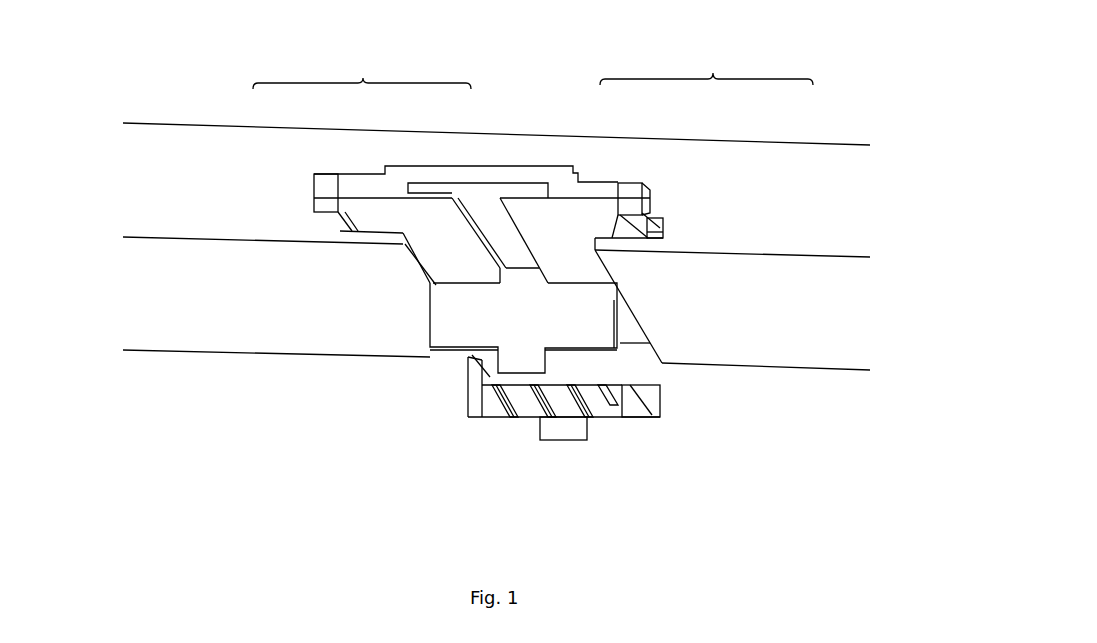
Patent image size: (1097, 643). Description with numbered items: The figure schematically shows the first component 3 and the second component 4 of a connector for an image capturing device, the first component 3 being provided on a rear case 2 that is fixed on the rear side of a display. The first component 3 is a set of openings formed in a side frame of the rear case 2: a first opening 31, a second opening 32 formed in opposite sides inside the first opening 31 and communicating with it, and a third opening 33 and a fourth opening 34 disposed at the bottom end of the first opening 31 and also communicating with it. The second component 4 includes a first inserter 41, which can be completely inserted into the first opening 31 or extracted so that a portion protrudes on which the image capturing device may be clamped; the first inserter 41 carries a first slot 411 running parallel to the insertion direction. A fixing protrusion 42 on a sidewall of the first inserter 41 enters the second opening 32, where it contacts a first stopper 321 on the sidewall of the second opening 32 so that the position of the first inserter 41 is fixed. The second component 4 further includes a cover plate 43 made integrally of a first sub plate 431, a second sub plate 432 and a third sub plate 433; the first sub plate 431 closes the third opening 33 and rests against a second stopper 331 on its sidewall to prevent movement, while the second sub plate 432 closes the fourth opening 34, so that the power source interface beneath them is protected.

The rear case 2 is at (812, 197).
The first component 3 is at (645, 255).
The first opening 31 is at (625, 232).
The second opening 32 is at (661, 218).
The third opening 33 is at (560, 393).
The second stopper 331 is at (587, 438).
The fourth opening 34 is at (651, 380).
The first stopper 321 is at (340, 235).
The second component 4 is at (440, 256).
The first inserter 41 is at (460, 166).
The first slot 411 is at (497, 217).
The fixing protrusion 42 is at (327, 175).
The cover plate 43 is at (378, 450).
The first sub plate 431 is at (470, 383).
The second sub plate 432 is at (465, 325).
The third sub plate 433 is at (432, 284).